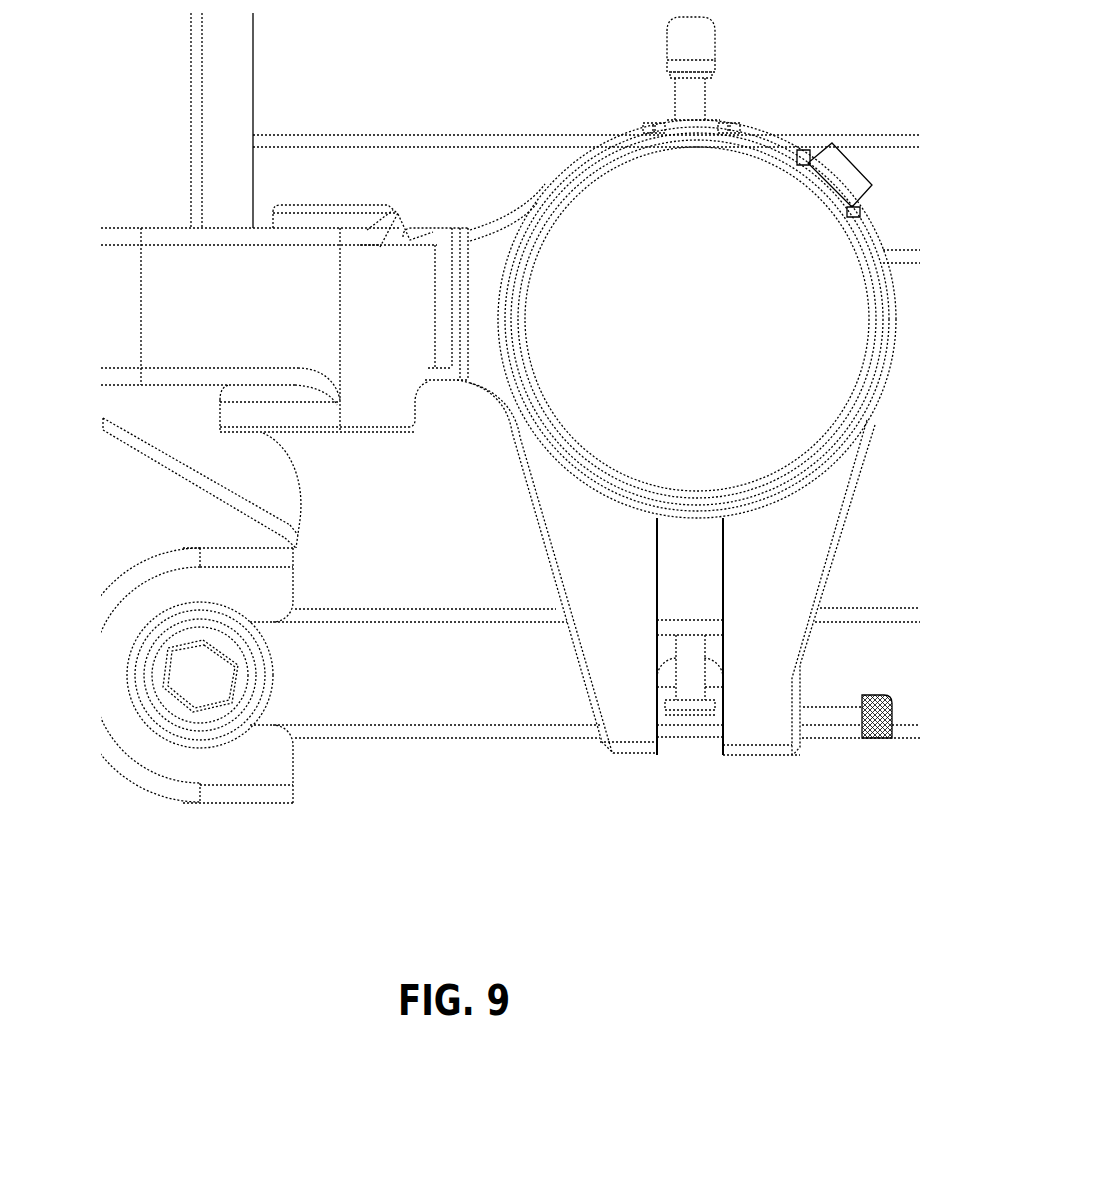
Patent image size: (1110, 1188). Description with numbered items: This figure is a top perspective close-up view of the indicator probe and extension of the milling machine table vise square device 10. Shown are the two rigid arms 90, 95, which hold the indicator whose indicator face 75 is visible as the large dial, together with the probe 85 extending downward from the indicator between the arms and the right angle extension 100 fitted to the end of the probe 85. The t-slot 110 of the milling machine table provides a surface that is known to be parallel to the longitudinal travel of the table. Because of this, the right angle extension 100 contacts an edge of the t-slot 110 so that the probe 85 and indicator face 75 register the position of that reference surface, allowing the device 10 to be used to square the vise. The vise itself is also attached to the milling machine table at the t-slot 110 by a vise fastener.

The milling machine table vise square device 10 is at (697, 267).
The indicator face 75 is at (690, 326).
The probe 85 is at (695, 658).
The rigid arm 90 is at (757, 578).
The rigid arm 95 is at (580, 586).
The right angle extension 100 is at (690, 710).
The t-slot 110 is at (362, 697).